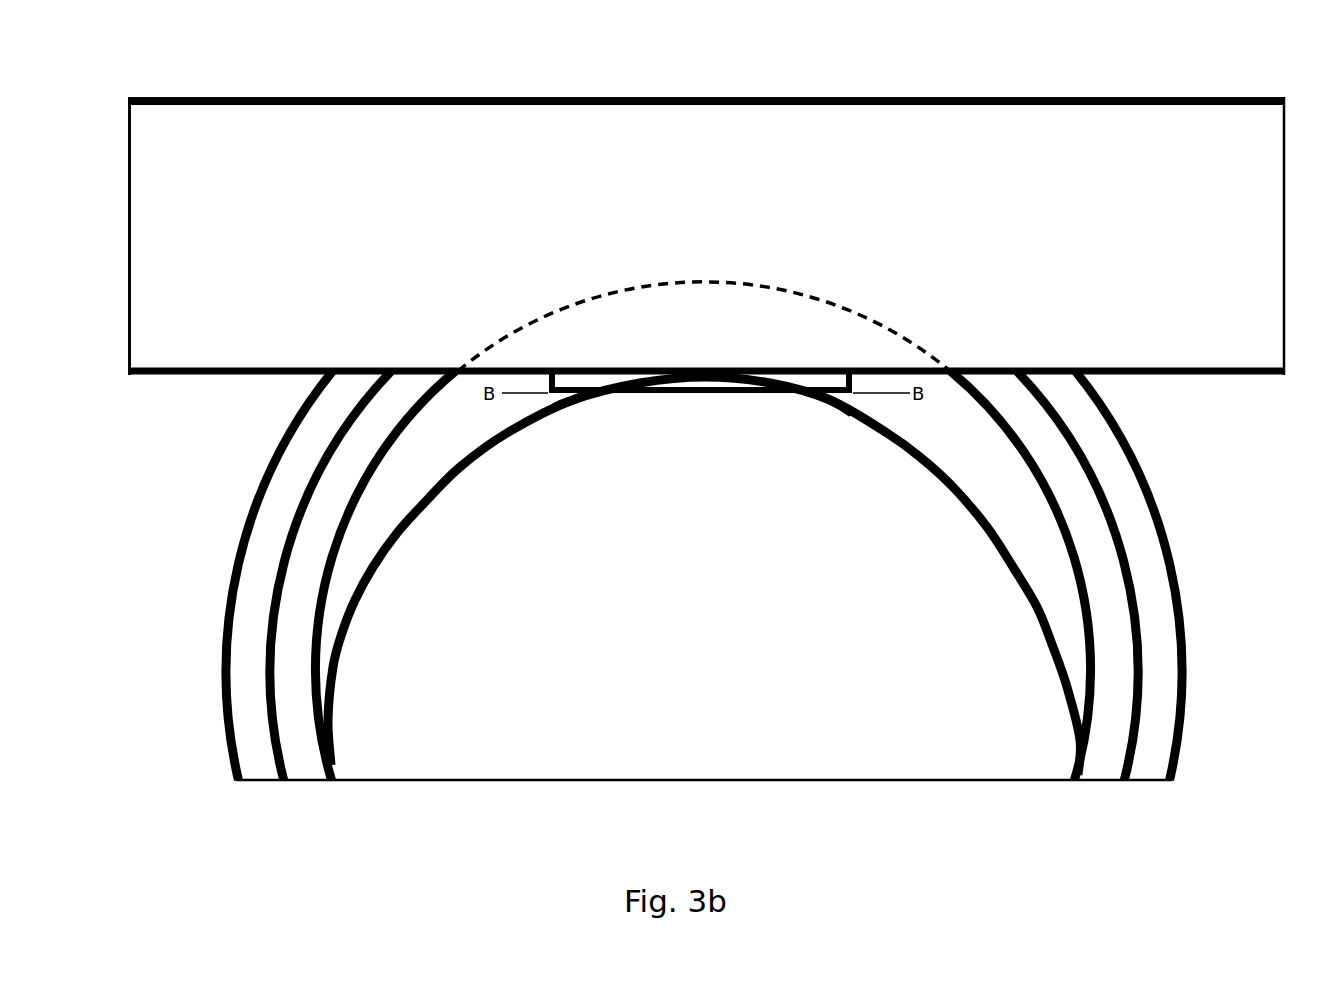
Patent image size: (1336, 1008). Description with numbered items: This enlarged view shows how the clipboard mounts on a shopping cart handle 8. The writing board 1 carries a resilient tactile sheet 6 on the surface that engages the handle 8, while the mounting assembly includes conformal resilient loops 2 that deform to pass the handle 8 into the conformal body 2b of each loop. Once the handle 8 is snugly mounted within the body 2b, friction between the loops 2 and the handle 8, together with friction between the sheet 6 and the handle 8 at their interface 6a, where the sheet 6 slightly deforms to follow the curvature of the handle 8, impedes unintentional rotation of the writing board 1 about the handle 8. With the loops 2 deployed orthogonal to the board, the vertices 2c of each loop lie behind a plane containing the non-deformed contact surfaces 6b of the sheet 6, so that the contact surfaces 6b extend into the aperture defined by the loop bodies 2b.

The writing board 1 is at (729, 97).
The conformal resilient loops 2 is at (1156, 607).
The conformal body 2b is at (311, 459).
The vertices 2c is at (812, 291).
The resilient tactile sheet 6 is at (819, 381).
The interface 6a is at (851, 404).
The non-deformed contact surfaces 6b is at (573, 402).
The shopping cart handle 8 is at (1035, 678).